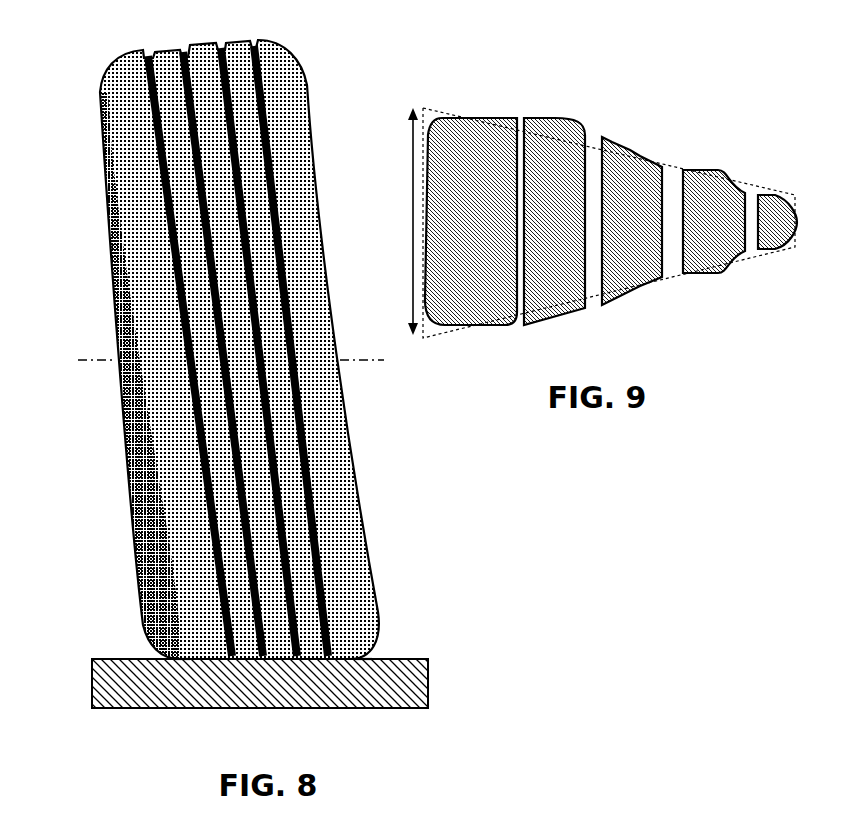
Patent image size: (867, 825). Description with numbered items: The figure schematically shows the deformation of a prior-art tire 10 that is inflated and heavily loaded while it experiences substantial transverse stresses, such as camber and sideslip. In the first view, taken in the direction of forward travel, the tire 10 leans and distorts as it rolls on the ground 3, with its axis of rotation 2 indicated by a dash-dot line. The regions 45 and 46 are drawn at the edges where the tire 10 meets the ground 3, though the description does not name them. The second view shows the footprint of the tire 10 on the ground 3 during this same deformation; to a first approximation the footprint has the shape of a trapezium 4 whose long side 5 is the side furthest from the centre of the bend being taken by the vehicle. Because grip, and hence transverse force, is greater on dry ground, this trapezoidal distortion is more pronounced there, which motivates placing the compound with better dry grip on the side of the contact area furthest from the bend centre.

In FIG. 8, the tire 10 is at (74, 52).
In FIG. 8, the axis of rotation 2 is at (219, 360).
In FIG. 8, the ground 3 is at (132, 680).
In FIG. 8, the leading contact edge 45 is at (170, 668).
In FIG. 8, the trailing contact edge 46 is at (378, 663).
In FIG. 9, the trapezium 4 is at (605, 140).
In FIG. 9, the long side 5 is at (404, 221).